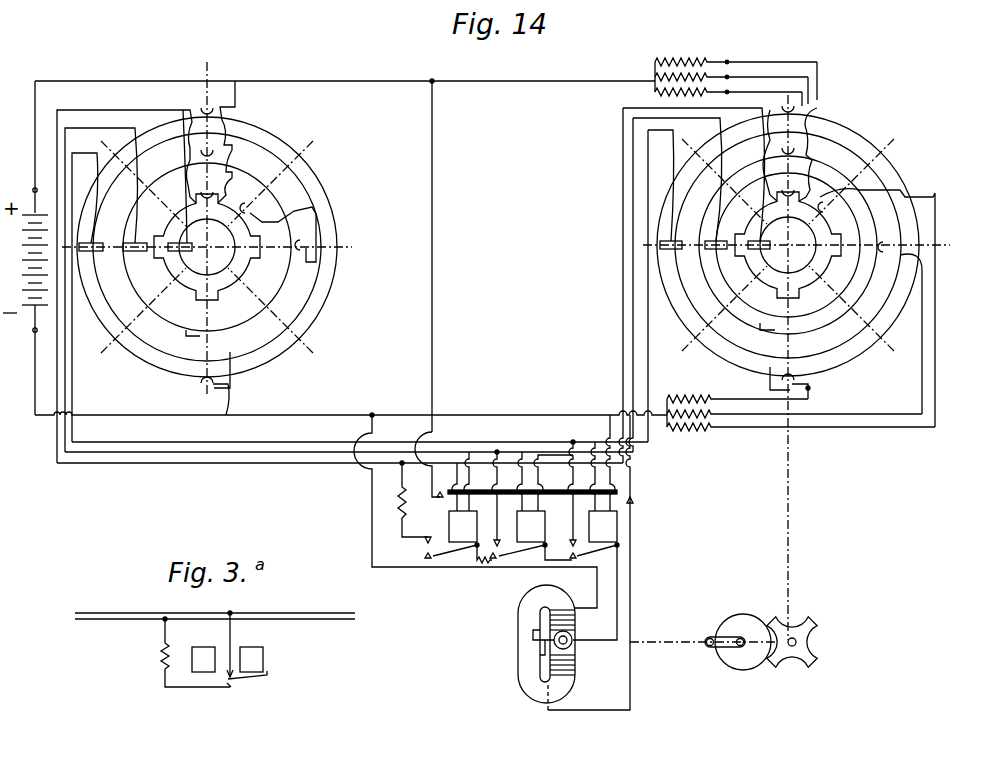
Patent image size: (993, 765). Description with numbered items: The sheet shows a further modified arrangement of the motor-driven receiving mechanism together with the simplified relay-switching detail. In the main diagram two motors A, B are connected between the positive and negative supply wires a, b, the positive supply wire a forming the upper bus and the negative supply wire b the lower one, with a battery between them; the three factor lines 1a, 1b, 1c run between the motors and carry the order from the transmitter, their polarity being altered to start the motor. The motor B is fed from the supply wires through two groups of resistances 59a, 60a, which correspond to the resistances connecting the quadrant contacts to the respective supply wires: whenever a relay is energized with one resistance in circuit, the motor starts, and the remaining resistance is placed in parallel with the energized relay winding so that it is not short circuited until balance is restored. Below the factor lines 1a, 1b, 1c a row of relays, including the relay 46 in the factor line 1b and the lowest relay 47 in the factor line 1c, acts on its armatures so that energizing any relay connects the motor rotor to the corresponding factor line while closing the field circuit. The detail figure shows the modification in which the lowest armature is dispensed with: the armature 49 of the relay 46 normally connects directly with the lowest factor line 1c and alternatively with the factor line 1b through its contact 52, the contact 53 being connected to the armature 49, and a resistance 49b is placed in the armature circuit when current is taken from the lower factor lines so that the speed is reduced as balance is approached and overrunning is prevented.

In FIG. 14, the transmitter A is at (204, 247).
In FIG. 14, the motor B is at (784, 347).
In FIG. 14, the supply wire a is at (345, 279).
In FIG. 14, the supply wire b is at (351, 500).
In FIG. 14, the factor line 1a is at (264, 442).
In FIG. 14, the factor line 1b is at (257, 453).
In FIG. 3A, the factor line 1b is at (122, 613).
In FIG. 14, the factor line 1c is at (218, 464).
In FIG. 3A, the factor line 1c is at (296, 620).
In FIG. 14, the resistance 59a is at (736, 59).
In FIG. 14, the resistance 60a is at (801, 430).
In FIG. 3A, the relay 46 is at (251, 659).
In FIG. 3A, the relay 47 is at (203, 659).
In FIG. 3A, the armature 49 is at (250, 681).
In FIG. 3A, the resistance 49b is at (110, 660).
In FIG. 3A, the contact 52 is at (232, 668).
In FIG. 3A, the contact 53 is at (227, 685).